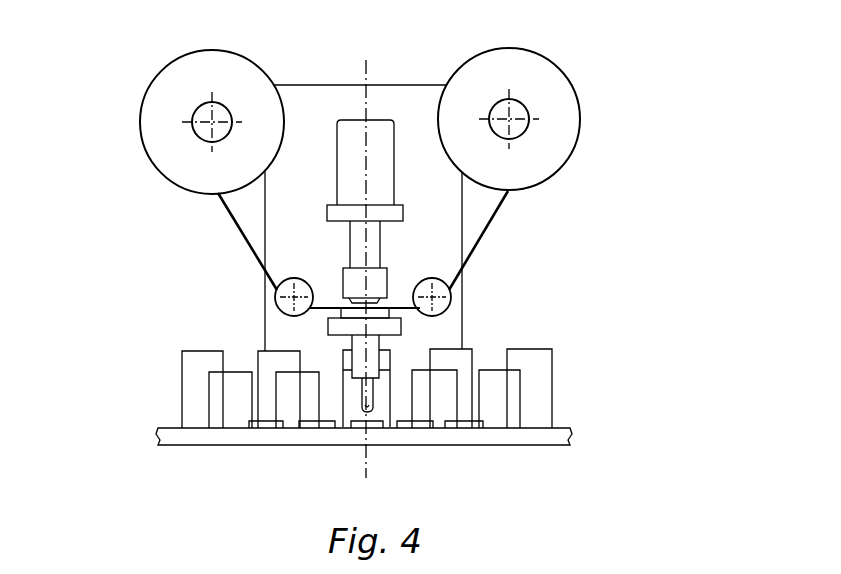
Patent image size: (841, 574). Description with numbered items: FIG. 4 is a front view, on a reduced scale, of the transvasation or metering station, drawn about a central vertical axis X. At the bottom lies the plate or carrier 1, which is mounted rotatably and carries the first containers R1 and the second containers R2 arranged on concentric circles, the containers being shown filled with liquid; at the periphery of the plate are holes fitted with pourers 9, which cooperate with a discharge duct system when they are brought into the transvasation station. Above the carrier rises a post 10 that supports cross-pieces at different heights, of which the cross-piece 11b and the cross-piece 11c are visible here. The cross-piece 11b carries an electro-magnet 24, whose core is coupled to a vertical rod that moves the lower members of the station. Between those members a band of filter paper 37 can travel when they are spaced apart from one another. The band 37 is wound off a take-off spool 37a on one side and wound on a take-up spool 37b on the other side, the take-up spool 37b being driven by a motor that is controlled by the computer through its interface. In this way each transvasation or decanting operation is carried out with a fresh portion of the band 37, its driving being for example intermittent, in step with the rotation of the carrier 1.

The plate or carrier 1 is at (160, 438).
The pourers 9 is at (315, 429).
The post 10 is at (315, 110).
The cross-piece 11b is at (398, 213).
The cross-piece 11c is at (337, 326).
The electro-magnet 24 is at (348, 177).
The band of filter paper 37 is at (242, 240).
The take-off spool 37a is at (147, 122).
The take-up spool 37b is at (560, 118).
The first containers R1 is at (195, 360).
The second containers R2 is at (222, 393).
The axis X is at (366, 73).